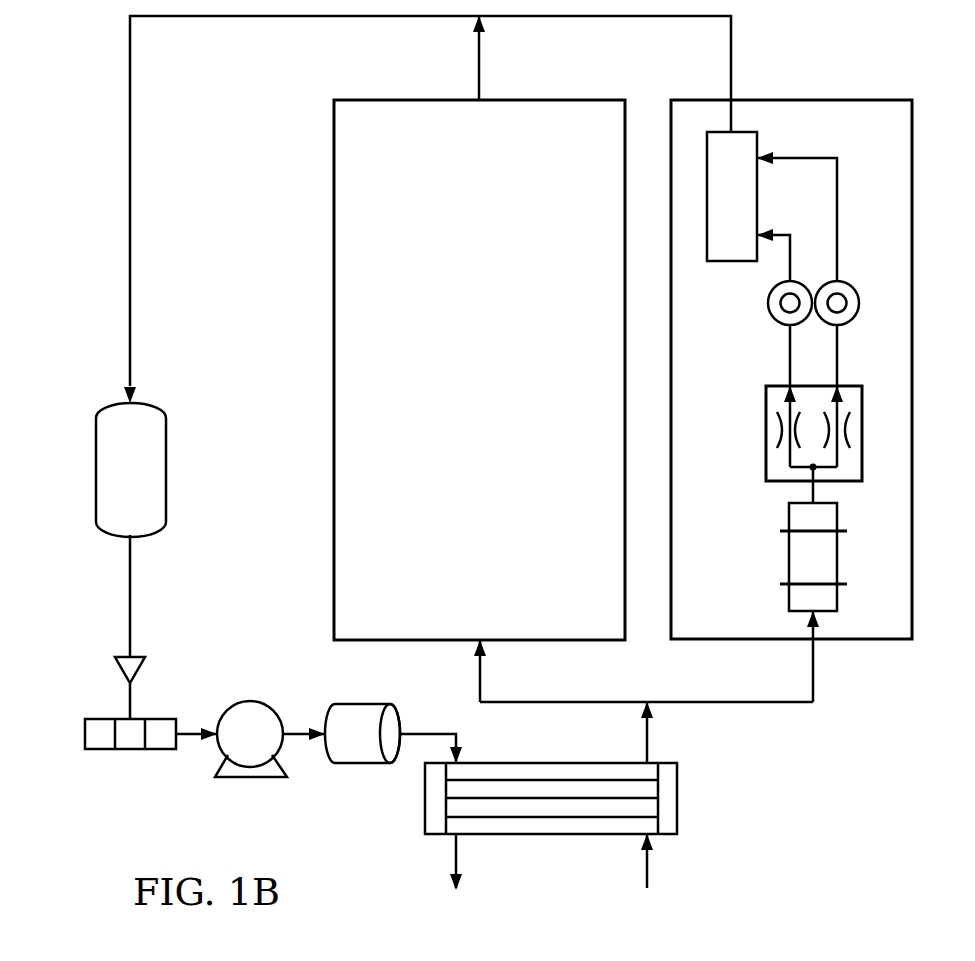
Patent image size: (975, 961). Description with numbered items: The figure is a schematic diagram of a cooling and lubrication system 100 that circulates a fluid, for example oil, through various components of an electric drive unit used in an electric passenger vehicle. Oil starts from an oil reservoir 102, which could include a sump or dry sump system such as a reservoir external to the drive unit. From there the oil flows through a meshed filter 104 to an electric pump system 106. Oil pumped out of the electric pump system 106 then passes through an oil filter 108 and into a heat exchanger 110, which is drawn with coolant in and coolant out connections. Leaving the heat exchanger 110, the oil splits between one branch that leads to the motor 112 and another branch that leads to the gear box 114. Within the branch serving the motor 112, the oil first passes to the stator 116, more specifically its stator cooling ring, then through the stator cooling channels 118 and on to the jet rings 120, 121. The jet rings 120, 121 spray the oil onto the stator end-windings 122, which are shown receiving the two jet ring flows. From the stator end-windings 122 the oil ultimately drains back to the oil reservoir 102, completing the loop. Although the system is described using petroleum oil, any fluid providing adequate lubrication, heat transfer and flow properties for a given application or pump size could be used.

The cooling and lubrication system 100 is at (784, 787).
The oil reservoir 102 is at (96, 468).
The meshed filter 104 is at (100, 750).
The electric pump system 106 is at (250, 778).
The oil filter 108 is at (362, 764).
The heat exchanger 110 is at (677, 797).
The motor 112 is at (880, 100).
The gear box 114 is at (390, 100).
The stator 116 is at (789, 558).
The stator cooling channels 118 is at (766, 432).
The jet ring 120 is at (850, 322).
The jet ring 121 is at (778, 322).
The stator end-windings 122 is at (757, 143).